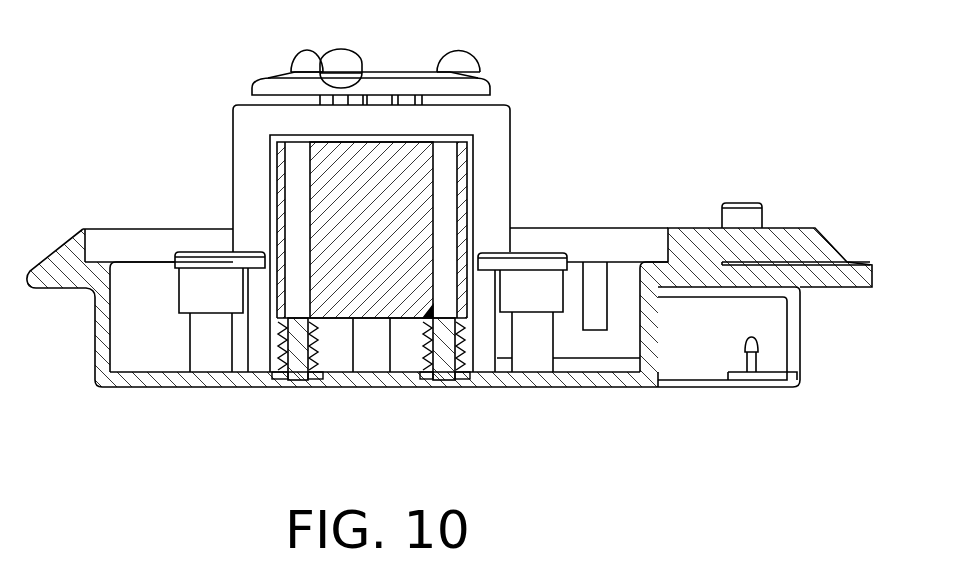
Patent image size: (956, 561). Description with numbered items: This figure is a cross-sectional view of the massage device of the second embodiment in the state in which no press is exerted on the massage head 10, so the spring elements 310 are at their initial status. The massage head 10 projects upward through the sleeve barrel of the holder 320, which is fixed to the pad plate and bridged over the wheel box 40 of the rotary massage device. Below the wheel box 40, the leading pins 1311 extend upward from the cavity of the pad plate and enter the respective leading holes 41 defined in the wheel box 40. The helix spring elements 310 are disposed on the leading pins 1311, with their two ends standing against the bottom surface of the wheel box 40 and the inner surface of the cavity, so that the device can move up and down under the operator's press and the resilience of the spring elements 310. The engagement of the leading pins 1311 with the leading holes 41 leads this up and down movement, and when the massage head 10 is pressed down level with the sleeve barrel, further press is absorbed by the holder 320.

The massage head 10 is at (303, 57).
The holder 320 is at (250, 180).
The wheel box 40 is at (410, 180).
The leading hole 41 is at (447, 242).
The spring element 310 is at (433, 320).
The leading pin 1311 is at (443, 343).